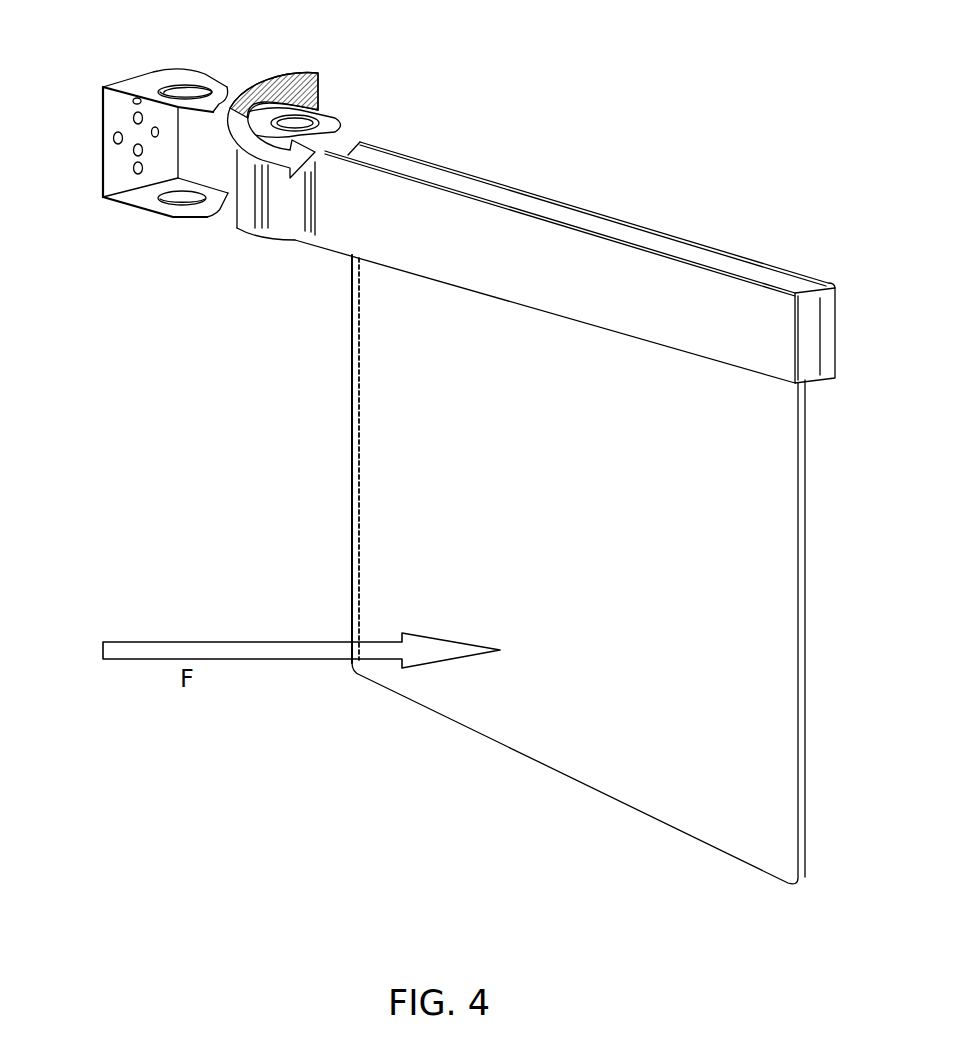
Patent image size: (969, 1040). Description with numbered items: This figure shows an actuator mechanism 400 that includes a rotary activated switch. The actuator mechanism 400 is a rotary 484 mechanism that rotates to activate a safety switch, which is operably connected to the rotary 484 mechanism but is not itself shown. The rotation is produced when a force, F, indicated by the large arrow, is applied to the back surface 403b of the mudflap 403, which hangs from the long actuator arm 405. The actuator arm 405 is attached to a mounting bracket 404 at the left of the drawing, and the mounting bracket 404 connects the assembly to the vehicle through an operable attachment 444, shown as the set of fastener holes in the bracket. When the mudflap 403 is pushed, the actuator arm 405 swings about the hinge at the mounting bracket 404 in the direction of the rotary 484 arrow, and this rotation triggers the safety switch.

The actuator mechanism 400 is at (601, 128).
The mudflap 403 is at (578, 569).
The back surface 403b is at (397, 488).
The mounting bracket 404 is at (148, 72).
The actuator arm 405 is at (348, 218).
The operable attachment 444 is at (130, 168).
The rotary 484 is at (277, 77).